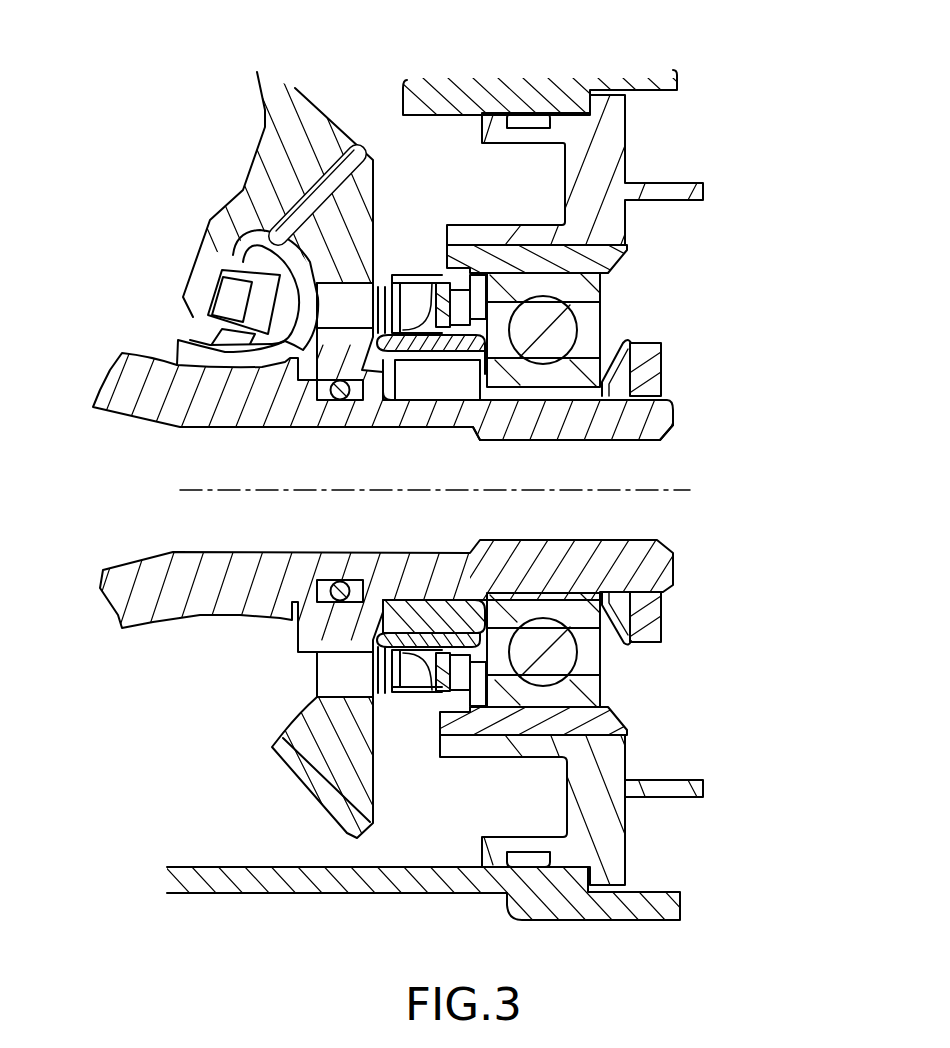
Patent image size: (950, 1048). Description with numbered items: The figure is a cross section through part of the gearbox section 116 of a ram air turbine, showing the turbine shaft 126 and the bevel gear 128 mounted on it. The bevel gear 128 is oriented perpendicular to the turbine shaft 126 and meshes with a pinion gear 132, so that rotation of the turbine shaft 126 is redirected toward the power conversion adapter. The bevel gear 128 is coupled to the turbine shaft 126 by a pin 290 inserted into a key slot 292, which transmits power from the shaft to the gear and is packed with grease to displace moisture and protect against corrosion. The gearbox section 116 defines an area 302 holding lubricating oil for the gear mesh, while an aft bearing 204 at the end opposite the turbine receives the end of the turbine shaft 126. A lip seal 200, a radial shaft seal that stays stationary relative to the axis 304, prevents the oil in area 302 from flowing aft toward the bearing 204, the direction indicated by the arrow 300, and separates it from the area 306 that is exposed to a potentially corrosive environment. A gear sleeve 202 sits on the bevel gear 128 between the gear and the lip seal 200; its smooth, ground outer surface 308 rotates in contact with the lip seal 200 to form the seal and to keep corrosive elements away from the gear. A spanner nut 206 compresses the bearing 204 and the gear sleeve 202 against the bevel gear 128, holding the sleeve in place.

The gearbox section 116 is at (760, 174).
The turbine shaft 126 is at (117, 412).
The bevel gear 128 is at (377, 176).
The pinion gear 132 is at (273, 155).
The lip seal 200 is at (424, 322).
The gear sleeve 202 is at (480, 357).
The bearing 204 is at (570, 328).
The spanner nut 206 is at (645, 375).
The pin 290 is at (460, 395).
The key slot 292 is at (553, 400).
The arrow 300 is at (381, 318).
The area 302 is at (388, 127).
The axis 304 is at (248, 492).
The area 306 is at (473, 325).
The outer surface 308 is at (458, 330).